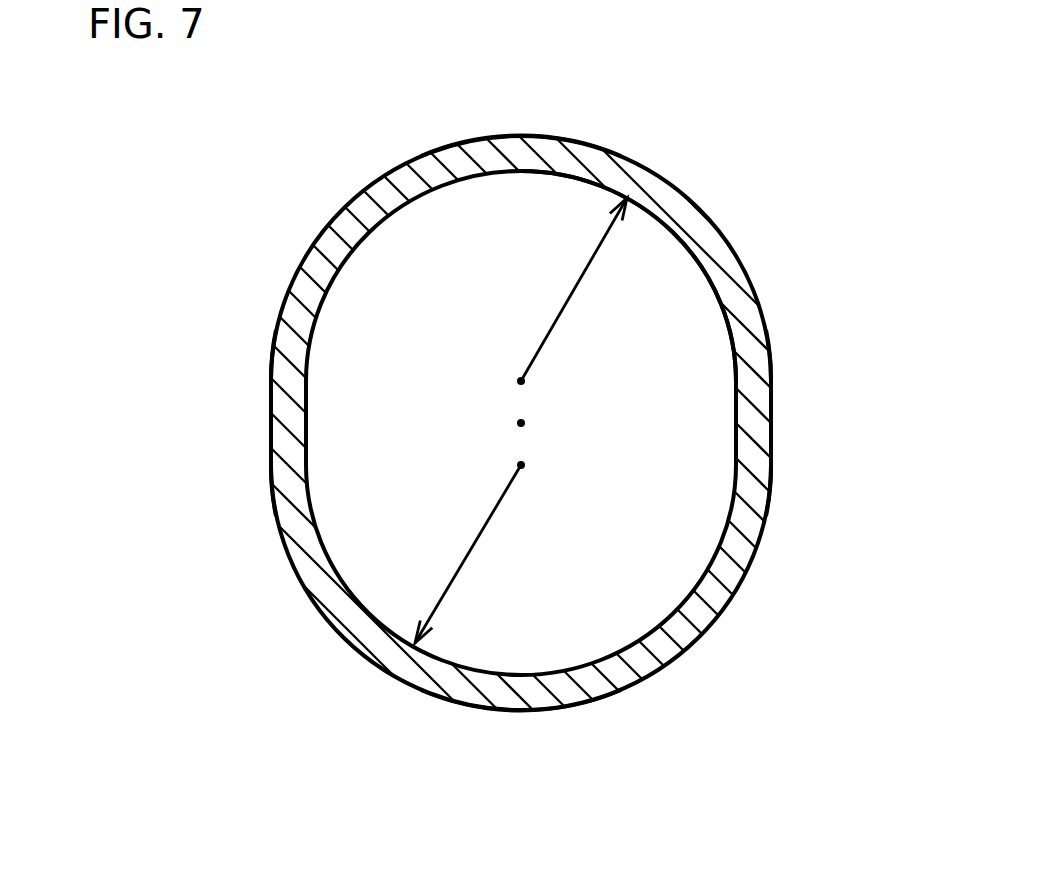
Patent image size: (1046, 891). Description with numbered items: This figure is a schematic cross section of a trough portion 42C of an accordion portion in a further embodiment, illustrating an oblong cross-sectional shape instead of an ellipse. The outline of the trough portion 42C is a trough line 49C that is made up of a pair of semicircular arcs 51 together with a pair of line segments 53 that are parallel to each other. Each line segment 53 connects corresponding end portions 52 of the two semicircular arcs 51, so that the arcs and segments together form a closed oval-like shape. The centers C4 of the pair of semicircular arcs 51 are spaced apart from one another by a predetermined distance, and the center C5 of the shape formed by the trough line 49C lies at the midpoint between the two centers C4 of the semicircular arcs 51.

The trough portion 42C is at (348, 202).
The trough line 49C is at (692, 198).
The semicircular arcs 51 is at (508, 135).
The end portions 52 is at (268, 382).
The line segments 53 is at (268, 416).
The centers of the semicircular arcs C4 is at (521, 381).
The center of the shape formed by the trough line C5 is at (521, 423).